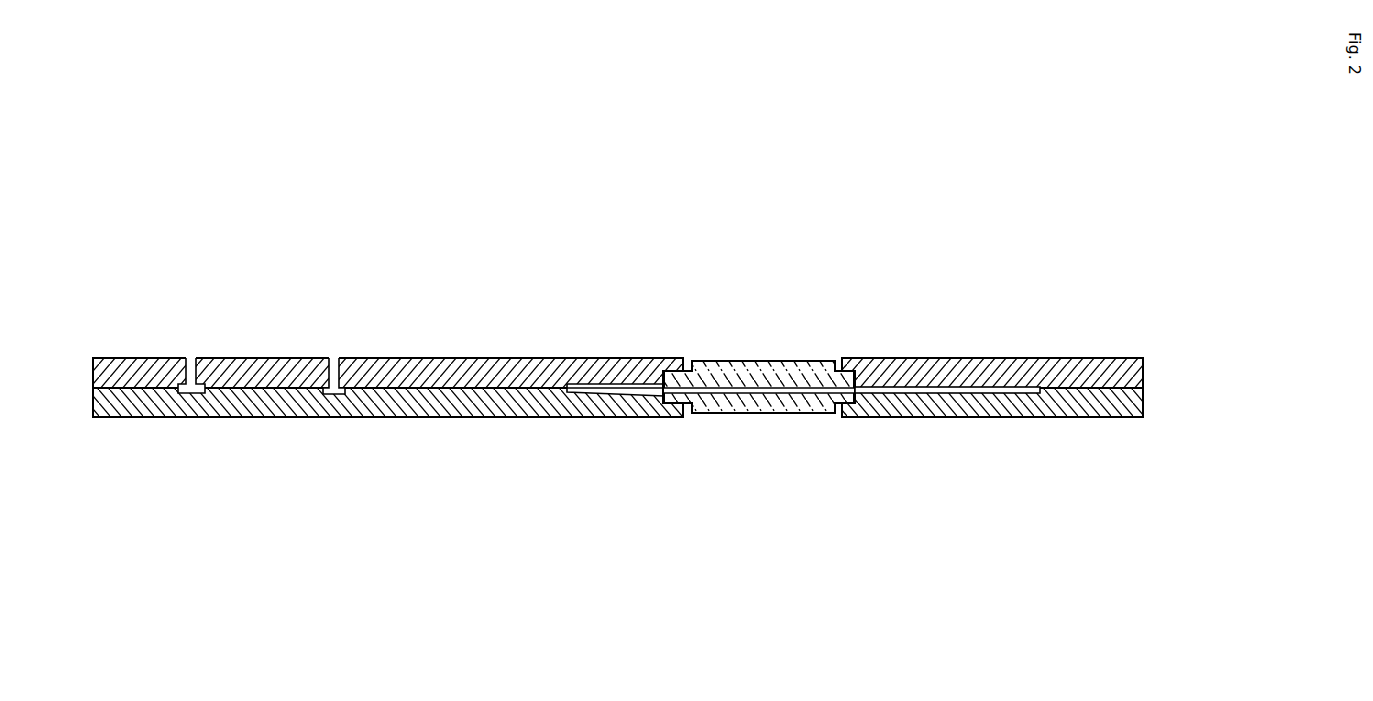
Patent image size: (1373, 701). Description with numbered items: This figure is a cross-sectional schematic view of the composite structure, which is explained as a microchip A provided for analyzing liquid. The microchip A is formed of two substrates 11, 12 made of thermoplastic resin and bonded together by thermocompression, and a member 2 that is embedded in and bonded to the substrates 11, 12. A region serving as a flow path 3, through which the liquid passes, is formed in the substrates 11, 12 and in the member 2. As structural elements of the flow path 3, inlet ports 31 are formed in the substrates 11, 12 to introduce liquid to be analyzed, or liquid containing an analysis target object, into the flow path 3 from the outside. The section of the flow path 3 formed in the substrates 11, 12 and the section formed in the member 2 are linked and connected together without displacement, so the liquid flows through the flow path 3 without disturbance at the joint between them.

The microchip A is at (707, 376).
The substrate 11 is at (1144, 368).
The substrate 12 is at (1144, 398).
The member 2 is at (766, 415).
The flow path 3 is at (947, 394).
The inlet port 31 is at (190, 357).